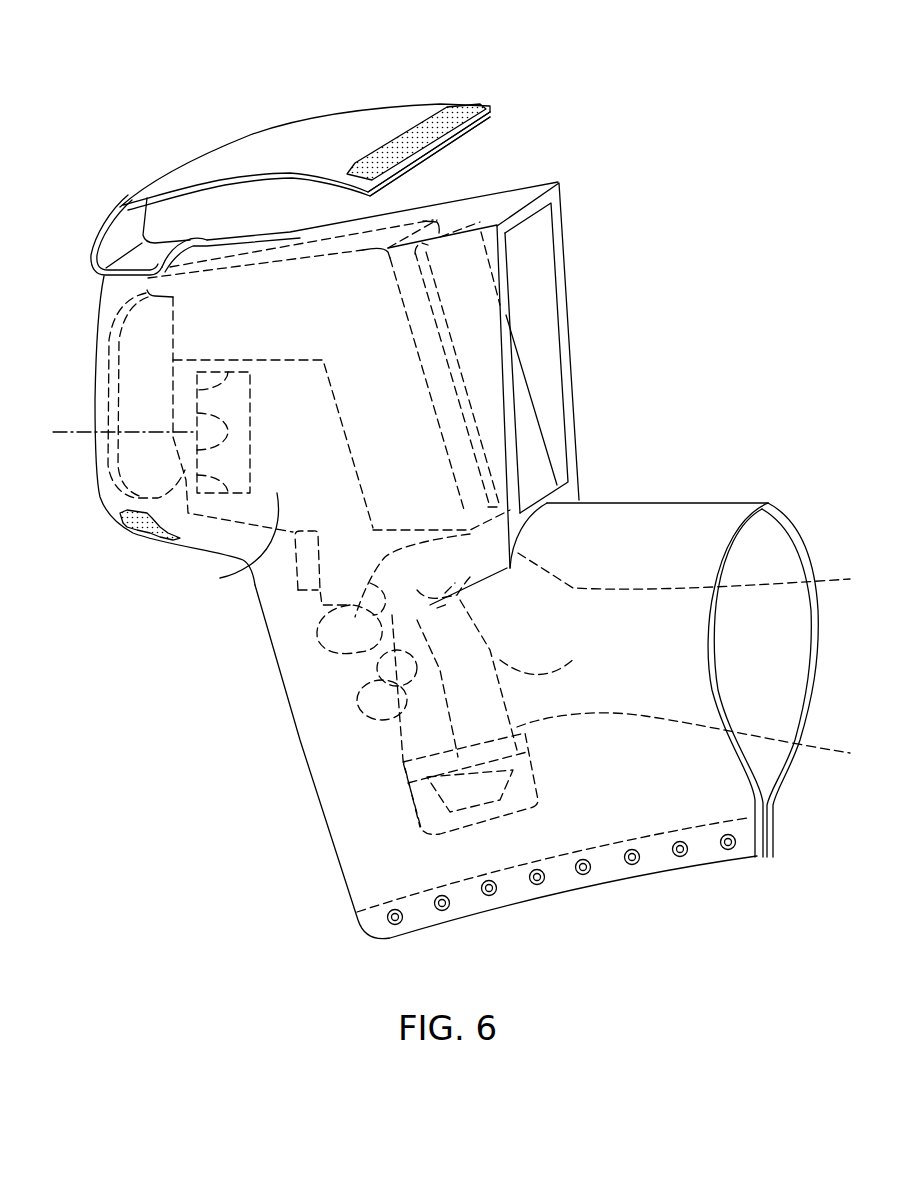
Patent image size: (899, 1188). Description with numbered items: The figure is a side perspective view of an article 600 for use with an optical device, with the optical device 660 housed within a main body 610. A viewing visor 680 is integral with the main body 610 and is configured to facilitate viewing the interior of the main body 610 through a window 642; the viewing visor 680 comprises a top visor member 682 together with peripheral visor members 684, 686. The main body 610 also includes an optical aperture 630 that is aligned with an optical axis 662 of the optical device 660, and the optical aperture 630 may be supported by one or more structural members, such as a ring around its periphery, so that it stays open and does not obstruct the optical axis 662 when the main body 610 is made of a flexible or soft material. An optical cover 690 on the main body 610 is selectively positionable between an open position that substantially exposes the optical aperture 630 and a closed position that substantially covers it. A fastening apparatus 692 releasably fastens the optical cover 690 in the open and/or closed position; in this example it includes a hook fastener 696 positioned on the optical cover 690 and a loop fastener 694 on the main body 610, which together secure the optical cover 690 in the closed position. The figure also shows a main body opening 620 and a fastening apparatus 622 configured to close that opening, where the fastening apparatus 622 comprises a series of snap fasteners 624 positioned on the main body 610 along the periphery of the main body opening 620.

The article 600 is at (185, 58).
The main body 610 is at (352, 792).
The main body opening 620 is at (705, 912).
The fastening apparatus 622 is at (340, 938).
The snap fasteners 624 is at (397, 924).
The optical aperture 630 is at (77, 306).
The window 642 is at (523, 443).
The optical device 660 is at (258, 560).
The optical axis 662 is at (62, 433).
The viewing visor 680 is at (580, 137).
The top visor member 682 is at (516, 205).
The peripheral visor member 684 is at (562, 320).
The peripheral visor member 686 is at (508, 270).
The optical cover 690 is at (286, 92).
The fastening apparatus 692 is at (466, 90).
The loop fastener 694 is at (140, 530).
The hook fastener 696 is at (408, 138).